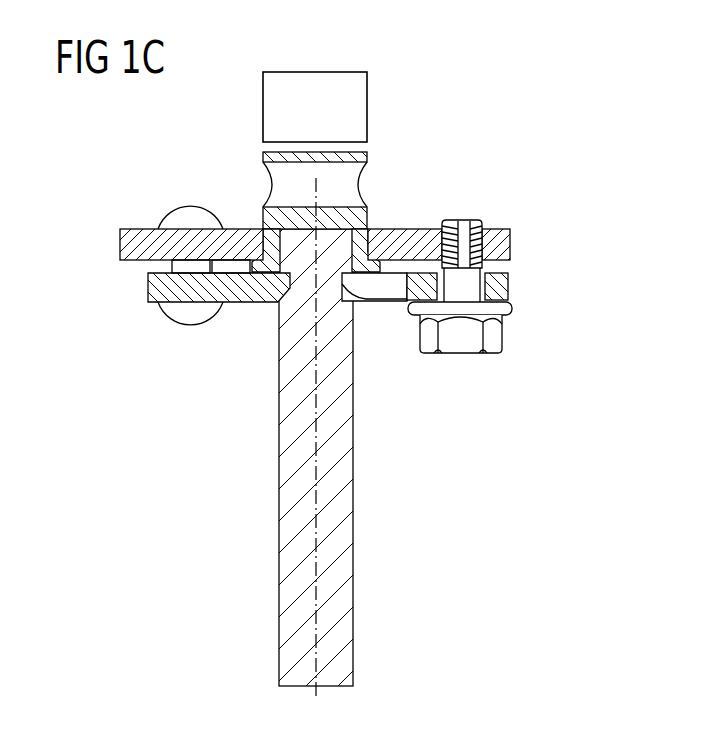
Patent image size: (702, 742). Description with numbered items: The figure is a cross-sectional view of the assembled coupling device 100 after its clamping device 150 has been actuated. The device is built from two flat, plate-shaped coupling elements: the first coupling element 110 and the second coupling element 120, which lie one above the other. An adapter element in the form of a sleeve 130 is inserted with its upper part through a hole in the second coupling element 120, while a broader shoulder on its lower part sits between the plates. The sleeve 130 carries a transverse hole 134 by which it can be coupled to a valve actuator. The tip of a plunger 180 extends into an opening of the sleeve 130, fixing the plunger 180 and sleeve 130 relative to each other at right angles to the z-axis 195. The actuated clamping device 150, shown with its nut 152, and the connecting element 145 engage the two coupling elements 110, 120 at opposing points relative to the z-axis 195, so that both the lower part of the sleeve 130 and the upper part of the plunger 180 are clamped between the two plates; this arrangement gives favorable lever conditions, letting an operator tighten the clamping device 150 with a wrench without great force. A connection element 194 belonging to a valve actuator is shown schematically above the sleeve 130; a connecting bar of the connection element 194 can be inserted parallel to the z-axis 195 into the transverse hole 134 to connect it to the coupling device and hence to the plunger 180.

The coupling device 100 is at (493, 190).
The first coupling element 110 is at (158, 293).
The second coupling element 120 is at (128, 241).
The sleeve 130 is at (367, 157).
The transverse hole 134 is at (362, 186).
The connecting element 145 is at (191, 212).
The clamping device 150 is at (465, 367).
The nut 152 is at (493, 340).
The plunger 180 is at (345, 514).
The connection element 194 is at (263, 104).
The z-axis 195 is at (307, 466).